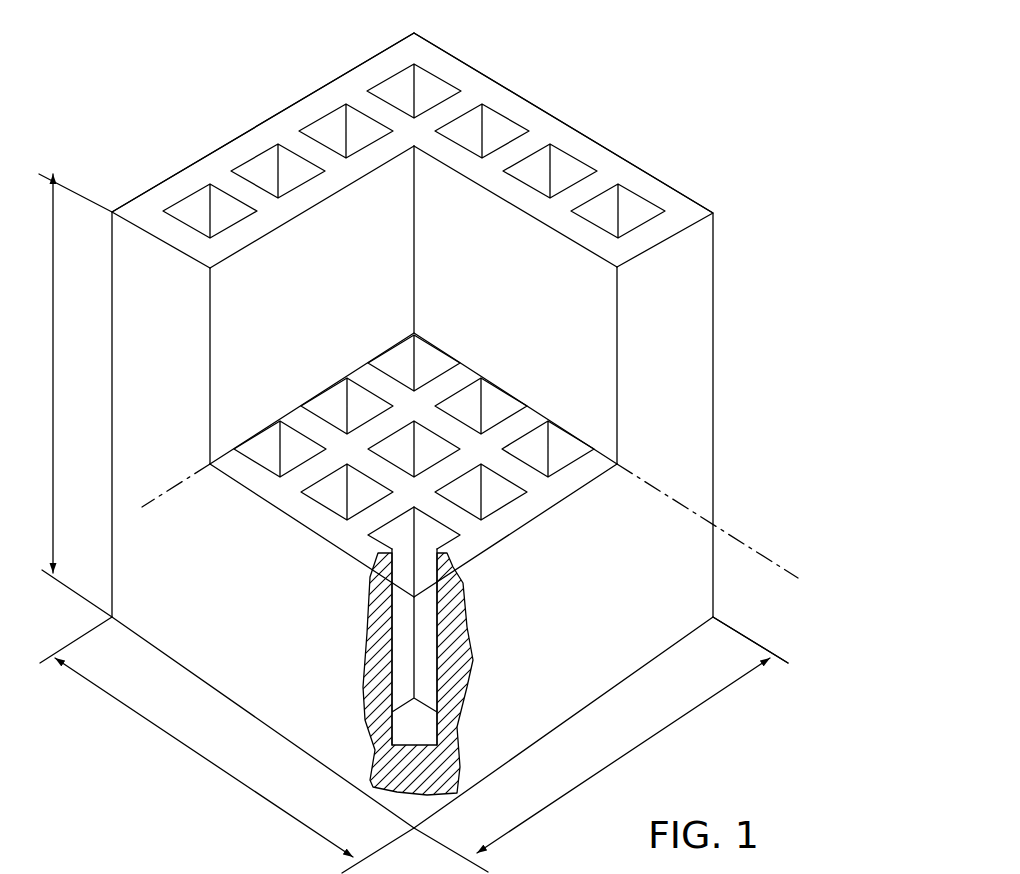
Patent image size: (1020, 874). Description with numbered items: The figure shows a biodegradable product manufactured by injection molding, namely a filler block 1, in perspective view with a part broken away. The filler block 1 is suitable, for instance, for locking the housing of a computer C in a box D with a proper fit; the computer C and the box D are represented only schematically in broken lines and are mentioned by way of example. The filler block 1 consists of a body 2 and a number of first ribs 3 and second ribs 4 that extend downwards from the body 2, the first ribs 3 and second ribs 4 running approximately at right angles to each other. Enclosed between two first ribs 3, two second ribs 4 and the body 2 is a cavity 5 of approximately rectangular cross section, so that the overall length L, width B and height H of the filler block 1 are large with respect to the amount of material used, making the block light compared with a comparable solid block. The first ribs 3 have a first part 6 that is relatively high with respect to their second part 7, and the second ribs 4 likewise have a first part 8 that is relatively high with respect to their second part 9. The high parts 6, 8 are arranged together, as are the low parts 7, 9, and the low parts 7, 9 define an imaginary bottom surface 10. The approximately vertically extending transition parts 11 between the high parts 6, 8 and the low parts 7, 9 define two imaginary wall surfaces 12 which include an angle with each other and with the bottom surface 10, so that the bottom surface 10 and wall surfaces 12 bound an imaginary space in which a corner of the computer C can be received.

The filler block 1 is at (802, 122).
The body 2 is at (421, 749).
The first ribs 3 is at (443, 33).
The second ribs 4 is at (115, 192).
The cavity 5 is at (190, 212).
The first part of first ribs 6 is at (262, 131).
The second part of first ribs 7 is at (302, 513).
The first part of second ribs 8 is at (638, 183).
The second part of second ribs 9 is at (303, 478).
The imaginary bottom surface 10 is at (488, 447).
The transition parts 11 is at (207, 332).
The imaginary wall surfaces 12 is at (297, 279).
The computer C is at (790, 572).
The height H is at (75, 395).
The length L is at (227, 745).
The width B is at (601, 744).
The box D is at (760, 648).